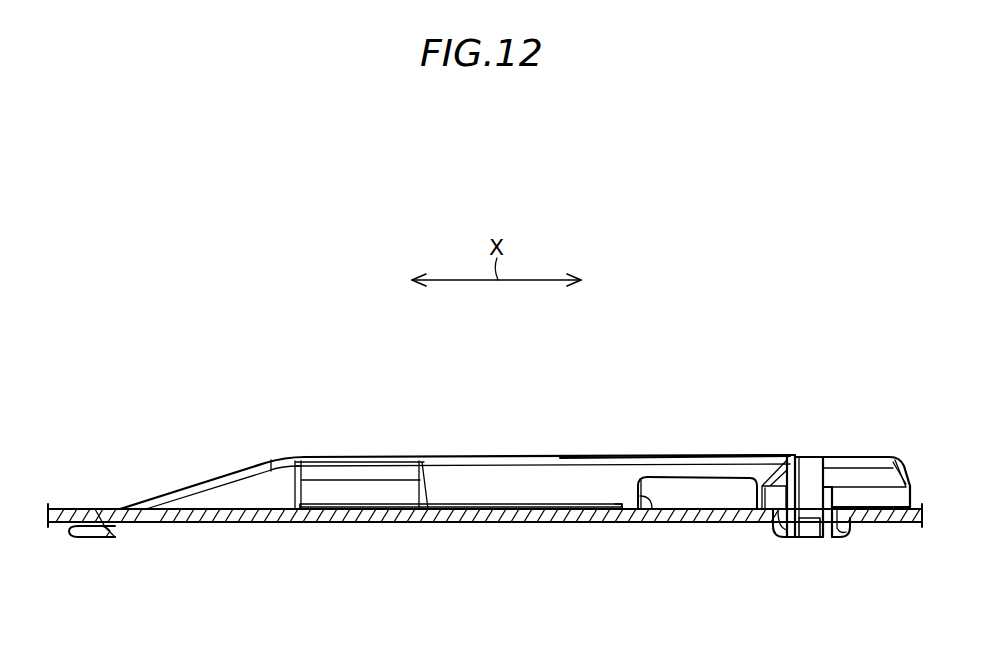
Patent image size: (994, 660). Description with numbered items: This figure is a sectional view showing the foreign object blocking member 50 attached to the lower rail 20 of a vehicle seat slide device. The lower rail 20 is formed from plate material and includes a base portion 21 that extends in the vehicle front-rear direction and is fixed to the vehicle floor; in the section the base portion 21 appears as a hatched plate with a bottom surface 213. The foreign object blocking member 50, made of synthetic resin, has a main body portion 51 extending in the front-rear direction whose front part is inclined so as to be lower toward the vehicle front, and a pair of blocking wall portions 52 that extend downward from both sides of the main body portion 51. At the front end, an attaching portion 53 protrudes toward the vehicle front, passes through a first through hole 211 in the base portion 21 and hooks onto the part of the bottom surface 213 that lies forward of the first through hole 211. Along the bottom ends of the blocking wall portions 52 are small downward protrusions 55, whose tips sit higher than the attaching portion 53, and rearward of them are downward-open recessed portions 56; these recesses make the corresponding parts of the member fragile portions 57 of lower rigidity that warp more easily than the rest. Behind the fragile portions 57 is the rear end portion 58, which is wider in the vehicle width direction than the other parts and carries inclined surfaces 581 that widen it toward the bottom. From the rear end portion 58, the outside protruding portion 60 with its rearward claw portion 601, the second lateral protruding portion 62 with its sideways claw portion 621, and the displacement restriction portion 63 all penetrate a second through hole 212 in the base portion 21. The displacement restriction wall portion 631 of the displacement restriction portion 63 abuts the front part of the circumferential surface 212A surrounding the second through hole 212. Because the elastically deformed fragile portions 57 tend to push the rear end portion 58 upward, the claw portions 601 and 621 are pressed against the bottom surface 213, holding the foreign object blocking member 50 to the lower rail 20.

The lower rail 20 is at (97, 509).
The base portion 21 is at (485, 547).
The first through hole 211 is at (108, 538).
The second through hole 212 is at (781, 533).
The circumferential surface 212A is at (781, 523).
The bottom surface 213 is at (471, 523).
The foreign object blocking member 50 is at (176, 413).
The main body portion 51 is at (455, 459).
The blocking wall portions 52 is at (550, 492).
The attaching portion 53 is at (70, 538).
The protrusions 55 is at (624, 512).
The recessed portions 56 is at (652, 512).
The fragile portions 57 is at (677, 467).
The rear end portion 58 is at (851, 456).
The inclined surfaces 581 is at (900, 470).
The outside protruding portion 60 is at (841, 531).
The claw portion 601 is at (841, 523).
The second lateral protruding portion 62 is at (812, 527).
The claw portion 621 is at (809, 497).
The displacement restriction portion 63 is at (775, 468).
The displacement restriction wall portion 631 is at (778, 496).